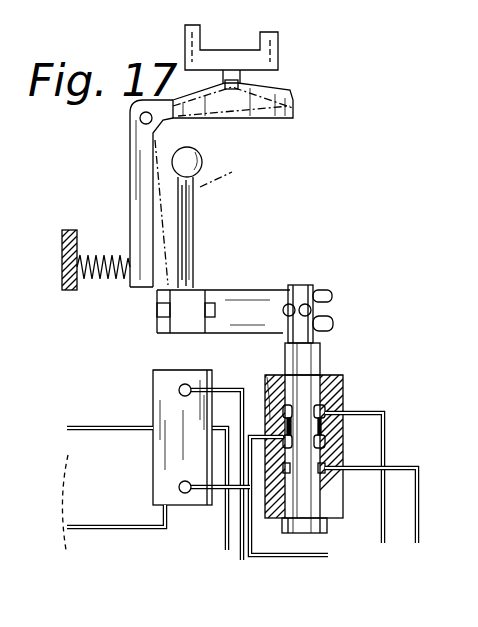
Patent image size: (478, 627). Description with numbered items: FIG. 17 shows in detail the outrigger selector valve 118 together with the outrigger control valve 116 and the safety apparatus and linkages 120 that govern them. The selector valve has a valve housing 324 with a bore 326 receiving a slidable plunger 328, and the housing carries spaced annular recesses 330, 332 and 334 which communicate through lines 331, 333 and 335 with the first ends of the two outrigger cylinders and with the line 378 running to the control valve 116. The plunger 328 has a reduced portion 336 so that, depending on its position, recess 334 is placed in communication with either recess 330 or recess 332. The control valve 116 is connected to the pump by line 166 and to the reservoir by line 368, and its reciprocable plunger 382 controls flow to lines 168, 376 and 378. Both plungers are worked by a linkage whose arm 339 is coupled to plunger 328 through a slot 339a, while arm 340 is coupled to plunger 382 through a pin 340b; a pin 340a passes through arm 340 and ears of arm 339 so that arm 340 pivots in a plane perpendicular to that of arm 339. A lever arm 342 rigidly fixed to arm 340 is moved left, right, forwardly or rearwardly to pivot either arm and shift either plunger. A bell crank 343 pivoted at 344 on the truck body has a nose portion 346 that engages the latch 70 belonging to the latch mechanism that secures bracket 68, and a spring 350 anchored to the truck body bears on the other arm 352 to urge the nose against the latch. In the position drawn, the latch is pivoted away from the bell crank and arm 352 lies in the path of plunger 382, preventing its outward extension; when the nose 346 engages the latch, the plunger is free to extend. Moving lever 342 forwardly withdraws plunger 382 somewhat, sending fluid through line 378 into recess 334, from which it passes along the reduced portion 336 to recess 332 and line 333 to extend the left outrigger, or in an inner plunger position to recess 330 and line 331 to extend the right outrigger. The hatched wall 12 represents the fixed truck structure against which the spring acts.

The wall 12 is at (73, 288).
The bracket 68 is at (185, 40).
The latch 70 is at (233, 70).
The outrigger control valve 116 is at (152, 395).
The outrigger selector valve 118 is at (346, 375).
The safety apparatus and linkages 120 is at (194, 248).
The line 166 is at (222, 548).
The line 168 is at (100, 432).
The valve housing 324 is at (340, 368).
The bore 326 is at (322, 396).
The plunger 328 is at (320, 325).
The annular recess 330 is at (326, 473).
The line 331 is at (420, 492).
The annular recess 332 is at (270, 377).
The line 333 is at (386, 436).
The annular recess 334 is at (324, 442).
The line 335 is at (310, 557).
The reduced portion 336 is at (322, 418).
The arm 339 is at (262, 297).
The slot 339a is at (336, 300).
The arm 340 is at (197, 288).
The pin 340a is at (214, 310).
The pin 340b is at (160, 312).
The lever arm 342 is at (194, 216).
The bell crank 343 is at (128, 136).
The pivot mounting 344 is at (152, 121).
The nose portion 346 is at (240, 82).
The spring 350 is at (104, 256).
The arm 352 is at (160, 202).
The line 368 is at (108, 525).
The line 376 is at (222, 388).
The line 378 is at (200, 492).
The plunger 382 is at (160, 368).